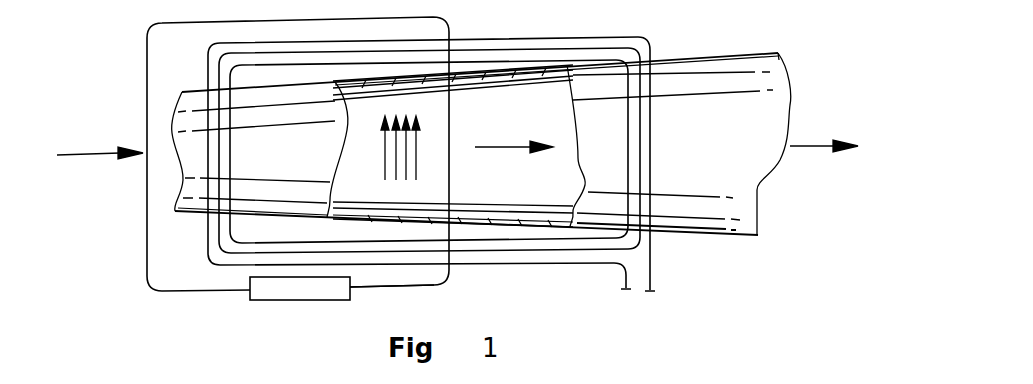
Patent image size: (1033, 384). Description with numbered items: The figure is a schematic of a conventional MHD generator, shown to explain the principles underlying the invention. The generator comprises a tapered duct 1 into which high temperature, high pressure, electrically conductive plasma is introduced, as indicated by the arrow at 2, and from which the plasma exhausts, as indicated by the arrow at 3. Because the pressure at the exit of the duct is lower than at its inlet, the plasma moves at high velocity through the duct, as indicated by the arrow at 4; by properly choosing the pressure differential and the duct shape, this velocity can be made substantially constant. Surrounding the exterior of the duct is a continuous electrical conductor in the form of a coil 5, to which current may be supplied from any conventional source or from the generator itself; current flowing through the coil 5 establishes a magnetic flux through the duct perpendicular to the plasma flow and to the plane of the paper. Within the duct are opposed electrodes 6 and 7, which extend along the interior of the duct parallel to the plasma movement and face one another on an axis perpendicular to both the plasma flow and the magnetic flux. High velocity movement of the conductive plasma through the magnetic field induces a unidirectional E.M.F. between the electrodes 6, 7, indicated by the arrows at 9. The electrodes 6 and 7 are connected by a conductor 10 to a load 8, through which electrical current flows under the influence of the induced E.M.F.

The tapered duct 1 is at (677, 53).
The plasma inlet arrow 2 is at (73, 152).
The plasma exhaust arrow 3 is at (790, 145).
The plasma flow direction arrow 4 is at (510, 145).
The coil 5 is at (488, 262).
The electrode 6 is at (455, 92).
The electrode 7 is at (465, 205).
The load 8 is at (313, 300).
The induced E.M.F. arrows 9 is at (418, 150).
The conductor 10 is at (385, 287).